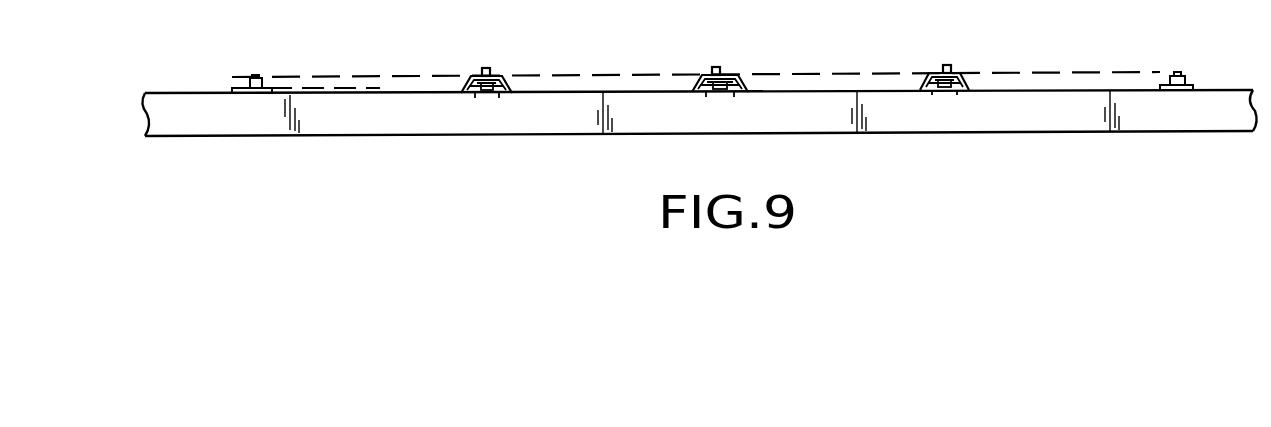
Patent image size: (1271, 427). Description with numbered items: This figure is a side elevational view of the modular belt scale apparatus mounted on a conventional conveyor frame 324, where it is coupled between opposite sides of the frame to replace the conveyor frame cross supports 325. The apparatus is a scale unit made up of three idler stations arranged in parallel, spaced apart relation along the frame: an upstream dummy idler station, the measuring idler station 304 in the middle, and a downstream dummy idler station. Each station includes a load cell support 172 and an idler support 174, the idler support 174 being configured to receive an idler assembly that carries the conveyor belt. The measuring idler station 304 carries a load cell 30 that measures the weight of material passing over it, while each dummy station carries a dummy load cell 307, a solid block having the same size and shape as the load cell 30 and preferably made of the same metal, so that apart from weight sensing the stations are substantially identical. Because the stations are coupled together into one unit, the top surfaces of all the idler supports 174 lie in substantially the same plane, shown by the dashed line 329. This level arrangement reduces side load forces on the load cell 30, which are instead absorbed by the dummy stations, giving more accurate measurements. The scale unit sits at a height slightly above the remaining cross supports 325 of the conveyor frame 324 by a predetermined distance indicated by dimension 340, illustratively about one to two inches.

The load cell 30 is at (733, 92).
The load cell support 172 is at (484, 95).
The idler support 174 is at (497, 73).
The measuring idler station 304 is at (701, 70).
The dummy load cell 307 is at (503, 96).
The conveyor frame 324 is at (568, 118).
The conveyor frame cross supports 325 is at (248, 92).
The line 329 is at (820, 73).
The dimension 340 is at (348, 147).